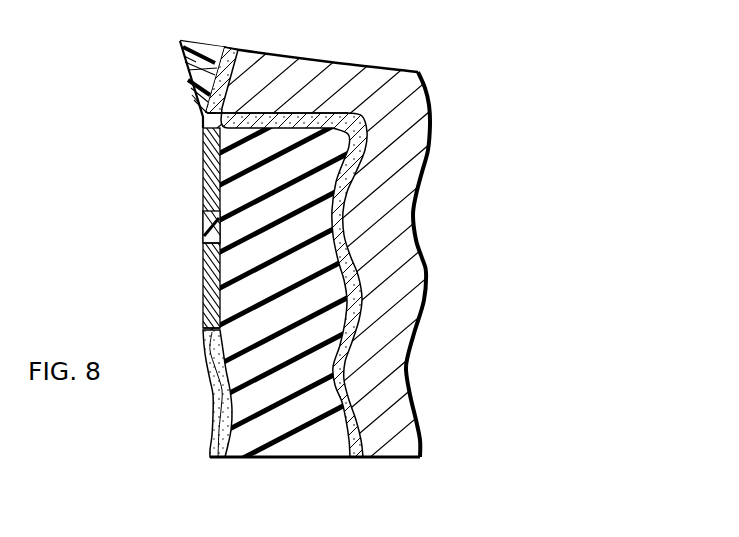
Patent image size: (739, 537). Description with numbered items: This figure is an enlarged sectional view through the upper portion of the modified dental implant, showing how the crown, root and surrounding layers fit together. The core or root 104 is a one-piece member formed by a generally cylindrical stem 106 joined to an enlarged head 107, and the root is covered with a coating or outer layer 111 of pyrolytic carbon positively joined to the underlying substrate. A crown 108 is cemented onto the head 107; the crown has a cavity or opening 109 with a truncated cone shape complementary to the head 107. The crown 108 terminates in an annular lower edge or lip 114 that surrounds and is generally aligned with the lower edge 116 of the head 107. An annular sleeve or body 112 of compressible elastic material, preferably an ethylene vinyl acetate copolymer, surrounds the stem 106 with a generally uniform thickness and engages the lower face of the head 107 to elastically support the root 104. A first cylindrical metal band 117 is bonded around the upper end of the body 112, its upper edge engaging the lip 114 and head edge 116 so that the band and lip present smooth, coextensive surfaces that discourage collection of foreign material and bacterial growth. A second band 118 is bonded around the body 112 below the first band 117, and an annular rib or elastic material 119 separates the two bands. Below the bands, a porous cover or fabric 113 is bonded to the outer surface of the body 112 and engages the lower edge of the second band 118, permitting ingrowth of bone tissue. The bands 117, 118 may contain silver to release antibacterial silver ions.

The core or root 104 is at (432, 86).
The stem 106 is at (408, 260).
The head 107 is at (353, 77).
The crown 108 is at (182, 49).
The cavity or opening 109 is at (187, 70).
The coating or outer layer 111 is at (362, 176).
The annular sleeve or body 112 is at (275, 430).
The porous cover or fabric 113 is at (215, 395).
The annular lower edge or lip 114 is at (198, 117).
The lower edge of head 116 is at (286, 112).
The first cylindrical metal band 117 is at (203, 173).
The second band 118 is at (202, 278).
The annular rib or elastic material 119 is at (202, 222).